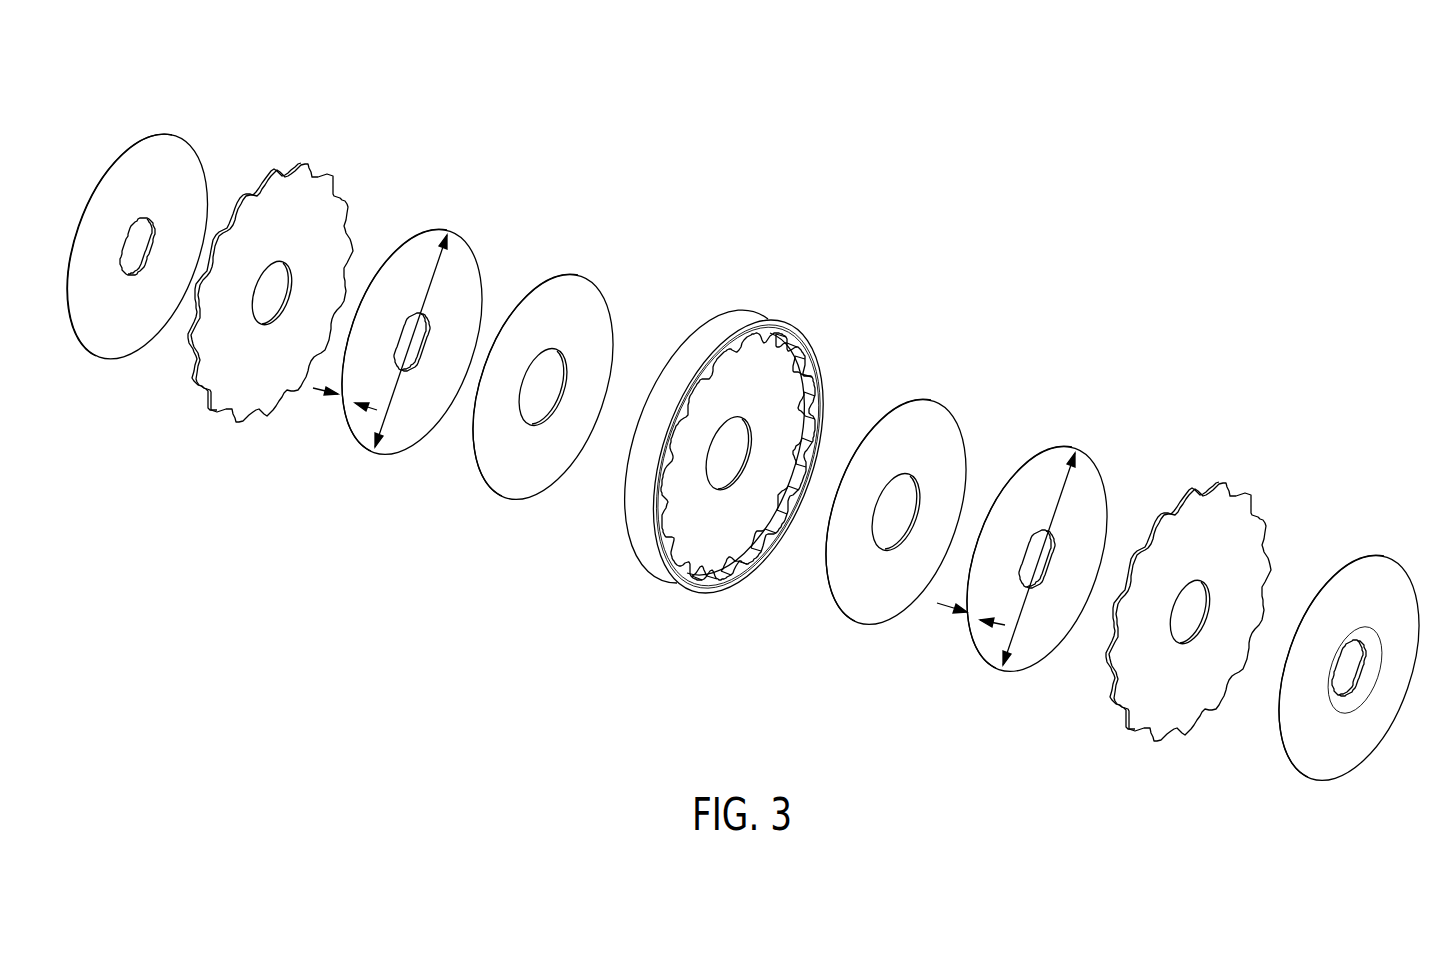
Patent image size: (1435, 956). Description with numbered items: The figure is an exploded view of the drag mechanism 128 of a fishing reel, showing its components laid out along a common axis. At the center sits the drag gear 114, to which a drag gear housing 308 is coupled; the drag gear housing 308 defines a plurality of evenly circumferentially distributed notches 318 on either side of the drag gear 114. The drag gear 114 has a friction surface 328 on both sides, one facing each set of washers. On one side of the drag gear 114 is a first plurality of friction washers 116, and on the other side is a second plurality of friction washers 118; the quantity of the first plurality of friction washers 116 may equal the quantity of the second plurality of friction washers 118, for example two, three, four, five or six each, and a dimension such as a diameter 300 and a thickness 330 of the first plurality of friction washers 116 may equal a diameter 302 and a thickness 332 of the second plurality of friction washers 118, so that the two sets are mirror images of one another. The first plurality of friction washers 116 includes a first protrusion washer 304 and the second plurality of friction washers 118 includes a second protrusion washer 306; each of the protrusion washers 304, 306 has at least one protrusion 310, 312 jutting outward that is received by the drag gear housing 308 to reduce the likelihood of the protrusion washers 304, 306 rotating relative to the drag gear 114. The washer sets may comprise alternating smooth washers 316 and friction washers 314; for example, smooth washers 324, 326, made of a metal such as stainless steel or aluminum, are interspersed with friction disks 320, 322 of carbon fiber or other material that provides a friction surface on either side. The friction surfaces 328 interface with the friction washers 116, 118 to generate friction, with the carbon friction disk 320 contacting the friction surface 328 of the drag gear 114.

The drag gear 114 is at (653, 562).
The first plurality of friction washers 116 is at (456, 149).
The second plurality of friction washers 118 is at (1157, 217).
The drag mechanism 128 is at (661, 121).
The diameter 300 is at (435, 283).
The diameter 302 is at (1063, 497).
The first protrusion washer 304 is at (330, 190).
The second protrusion washer 306 is at (1198, 507).
The drag gear housing 308 is at (760, 572).
The protrusion 310 is at (283, 183).
The protrusion 312 is at (1257, 545).
The friction washer 314 is at (940, 420).
The smooth washer 316 is at (1053, 460).
The notch 318 is at (815, 367).
The friction disk 320 is at (583, 302).
The friction disk 322 is at (228, 405).
The smooth washer 324 is at (420, 245).
The smooth washer 326 is at (183, 160).
The friction surface 328 is at (770, 368).
The thickness 330 is at (317, 390).
The thickness 332 is at (948, 613).